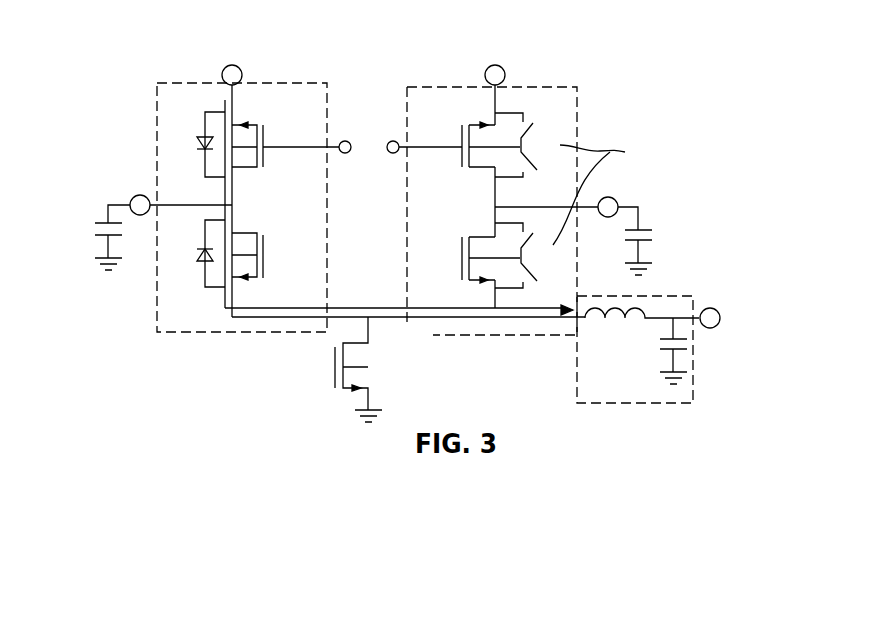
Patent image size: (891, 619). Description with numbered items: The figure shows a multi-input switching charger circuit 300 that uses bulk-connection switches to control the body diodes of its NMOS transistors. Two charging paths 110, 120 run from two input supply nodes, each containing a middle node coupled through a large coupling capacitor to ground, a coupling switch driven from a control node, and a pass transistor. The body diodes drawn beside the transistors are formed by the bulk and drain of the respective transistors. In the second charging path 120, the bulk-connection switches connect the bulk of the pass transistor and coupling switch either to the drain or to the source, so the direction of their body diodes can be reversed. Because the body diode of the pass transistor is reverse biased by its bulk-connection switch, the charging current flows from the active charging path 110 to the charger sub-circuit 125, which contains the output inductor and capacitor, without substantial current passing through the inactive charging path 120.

The charging path 110 is at (157, 100).
The charging path 120 is at (563, 87).
The charger sub-circuit 125 is at (617, 397).
The multi-input switching charger circuit 300 is at (632, 63).